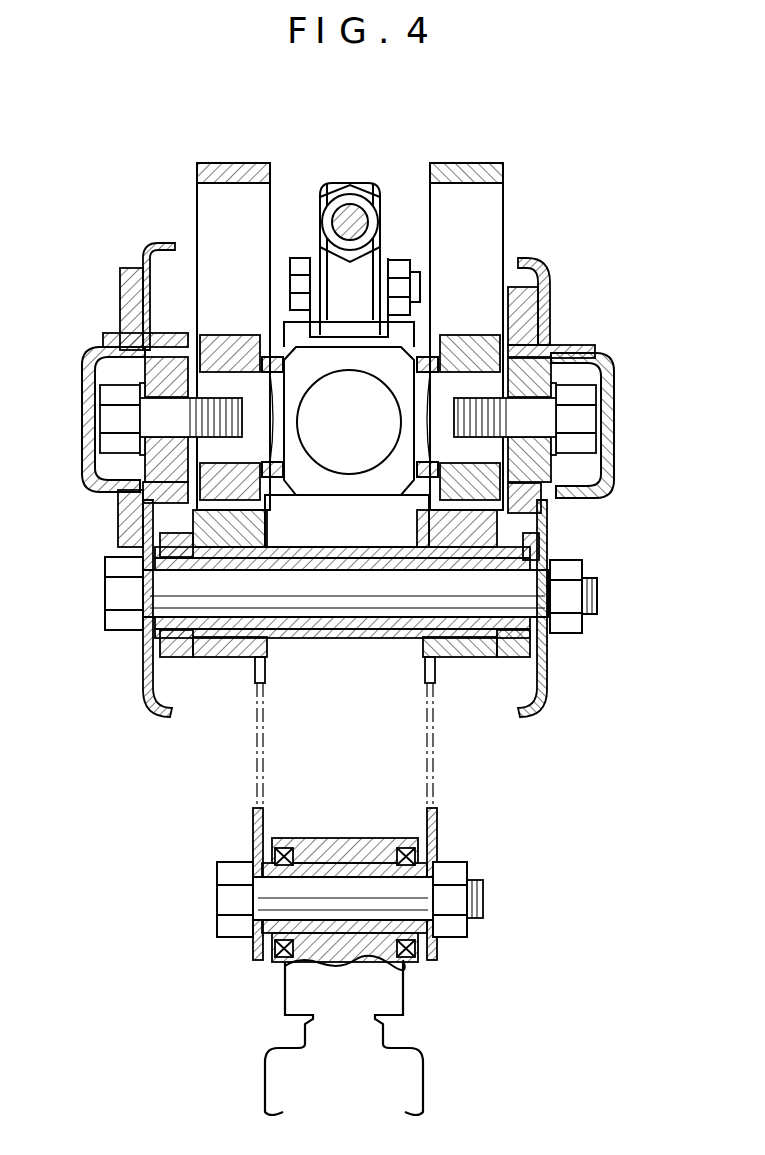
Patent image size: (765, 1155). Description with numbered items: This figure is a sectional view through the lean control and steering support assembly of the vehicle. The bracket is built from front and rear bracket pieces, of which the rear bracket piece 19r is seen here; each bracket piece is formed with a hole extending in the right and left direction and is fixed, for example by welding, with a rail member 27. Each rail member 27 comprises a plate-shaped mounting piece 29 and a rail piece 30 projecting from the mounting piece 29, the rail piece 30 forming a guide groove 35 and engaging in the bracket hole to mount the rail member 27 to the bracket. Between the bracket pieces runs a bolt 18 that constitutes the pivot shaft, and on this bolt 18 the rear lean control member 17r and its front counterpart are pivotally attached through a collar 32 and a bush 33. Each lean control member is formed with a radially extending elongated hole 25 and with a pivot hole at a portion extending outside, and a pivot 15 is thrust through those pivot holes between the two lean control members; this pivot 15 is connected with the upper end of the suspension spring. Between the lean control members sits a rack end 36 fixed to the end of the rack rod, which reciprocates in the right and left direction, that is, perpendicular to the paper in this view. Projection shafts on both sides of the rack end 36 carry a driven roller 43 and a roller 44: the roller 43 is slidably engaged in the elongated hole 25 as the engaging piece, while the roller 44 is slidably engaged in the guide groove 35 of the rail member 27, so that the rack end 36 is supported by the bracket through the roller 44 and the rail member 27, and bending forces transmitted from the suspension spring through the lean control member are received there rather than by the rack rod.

The pivot 15 is at (353, 908).
The rear lean control member 17r is at (230, 648).
The bolt (pivot shaft) 18 is at (307, 622).
The rear bracket piece 19r is at (145, 697).
The elongated hole 25 is at (205, 197).
The rail member 27 is at (618, 413).
The mounting piece 29 is at (120, 345).
The rail piece 30 is at (170, 487).
The collar 32 is at (390, 622).
The bush 33 is at (193, 630).
The guide groove 35 is at (114, 490).
The rack end 36 is at (387, 488).
The roller (driven roller) 43 is at (229, 345).
The roller 44 is at (545, 373).